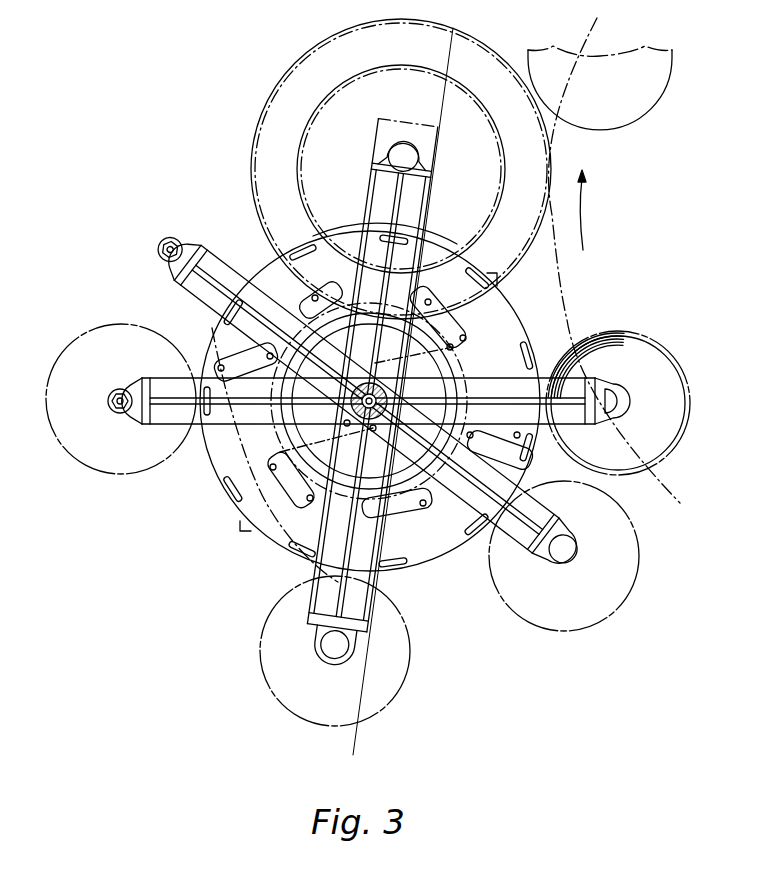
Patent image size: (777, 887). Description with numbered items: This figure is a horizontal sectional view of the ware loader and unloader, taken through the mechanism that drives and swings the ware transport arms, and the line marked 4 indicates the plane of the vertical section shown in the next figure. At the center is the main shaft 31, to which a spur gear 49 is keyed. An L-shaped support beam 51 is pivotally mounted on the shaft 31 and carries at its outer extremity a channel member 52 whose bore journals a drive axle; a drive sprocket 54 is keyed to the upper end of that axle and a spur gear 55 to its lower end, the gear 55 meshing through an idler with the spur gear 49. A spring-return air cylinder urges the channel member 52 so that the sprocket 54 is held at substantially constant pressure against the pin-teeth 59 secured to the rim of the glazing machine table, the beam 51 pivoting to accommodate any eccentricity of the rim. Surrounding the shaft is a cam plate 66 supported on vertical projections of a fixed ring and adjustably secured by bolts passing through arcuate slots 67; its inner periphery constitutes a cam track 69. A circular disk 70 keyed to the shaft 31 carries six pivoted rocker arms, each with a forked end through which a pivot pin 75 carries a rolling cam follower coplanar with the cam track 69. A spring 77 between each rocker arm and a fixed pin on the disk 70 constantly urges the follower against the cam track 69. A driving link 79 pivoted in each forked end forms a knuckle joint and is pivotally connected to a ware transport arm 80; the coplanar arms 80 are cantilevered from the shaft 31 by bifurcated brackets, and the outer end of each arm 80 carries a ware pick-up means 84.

The section line 4- 4 is at (369, 384).
The main shaft 31 is at (364, 392).
The spur gear 49 is at (417, 358).
The L-shaped support beam 51 is at (370, 394).
The channel member 52 is at (381, 135).
The drive sprocket 54 is at (258, 130).
The spur gear 55 is at (506, 172).
The pin-teeth 59 is at (560, 291).
The cam plate 66 is at (276, 542).
The arcuate slots 67 is at (226, 483).
The cam track 69 is at (252, 434).
The circular disk 70 is at (282, 455).
The pivot pin 75 is at (308, 505).
The spring 77 is at (328, 436).
The driving link 79 is at (312, 505).
The ware transport arm 80 is at (370, 386).
The ware pick-up means 84 is at (165, 232).